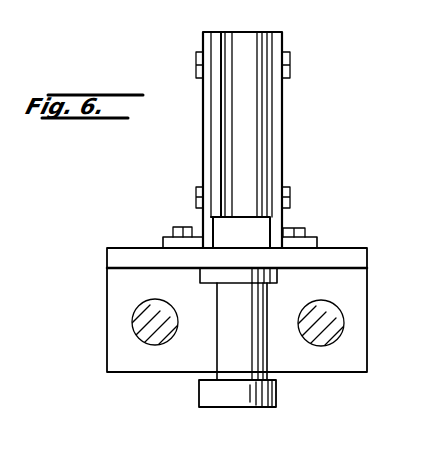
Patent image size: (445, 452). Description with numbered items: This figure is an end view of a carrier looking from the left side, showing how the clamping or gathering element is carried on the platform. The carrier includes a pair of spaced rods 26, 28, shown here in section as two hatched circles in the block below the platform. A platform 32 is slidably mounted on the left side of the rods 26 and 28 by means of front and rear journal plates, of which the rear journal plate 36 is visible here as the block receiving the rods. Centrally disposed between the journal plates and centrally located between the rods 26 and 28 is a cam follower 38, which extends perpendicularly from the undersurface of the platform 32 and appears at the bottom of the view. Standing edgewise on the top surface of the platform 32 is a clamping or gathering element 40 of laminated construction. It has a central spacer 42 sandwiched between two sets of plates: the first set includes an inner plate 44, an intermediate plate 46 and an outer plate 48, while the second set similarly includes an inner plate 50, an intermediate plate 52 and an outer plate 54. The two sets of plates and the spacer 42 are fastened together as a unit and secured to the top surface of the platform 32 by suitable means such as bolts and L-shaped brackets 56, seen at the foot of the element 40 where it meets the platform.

The rod 26 is at (132, 325).
The rod 28 is at (327, 310).
The platform 32 is at (352, 257).
The rear journal plate 36 is at (118, 296).
The cam follower 38 is at (208, 394).
The clamping or gathering element 40 is at (283, 112).
The central spacer 42 is at (235, 146).
The inner plate 44 is at (228, 118).
The intermediate plate 46 is at (222, 34).
The outer plate 48 is at (218, 50).
The inner plate 50 is at (258, 85).
The intermediate plate 52 is at (262, 35).
The outer plate 54 is at (270, 40).
The L-shaped bracket 56 is at (311, 243).